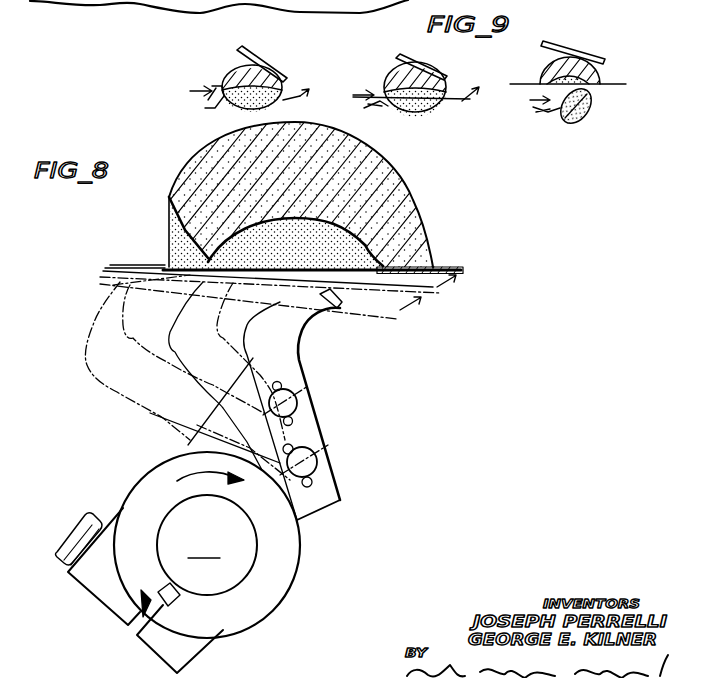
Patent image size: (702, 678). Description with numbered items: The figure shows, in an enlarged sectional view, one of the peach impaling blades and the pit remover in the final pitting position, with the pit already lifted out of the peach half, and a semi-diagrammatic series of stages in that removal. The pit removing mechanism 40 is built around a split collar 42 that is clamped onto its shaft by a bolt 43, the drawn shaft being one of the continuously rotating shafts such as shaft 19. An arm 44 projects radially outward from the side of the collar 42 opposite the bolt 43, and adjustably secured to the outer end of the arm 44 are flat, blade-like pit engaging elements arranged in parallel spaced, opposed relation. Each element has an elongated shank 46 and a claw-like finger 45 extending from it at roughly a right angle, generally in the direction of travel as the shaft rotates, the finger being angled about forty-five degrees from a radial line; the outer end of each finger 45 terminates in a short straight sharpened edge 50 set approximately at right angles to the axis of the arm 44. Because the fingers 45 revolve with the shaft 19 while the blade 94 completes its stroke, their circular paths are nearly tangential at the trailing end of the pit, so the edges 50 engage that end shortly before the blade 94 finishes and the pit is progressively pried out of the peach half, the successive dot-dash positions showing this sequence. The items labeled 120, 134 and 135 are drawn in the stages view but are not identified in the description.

In FIG. 8, the shaft 19 is at (204, 547).
In FIG. 8, the mechanism 40 is at (350, 444).
In FIG. 8, the split collar 42 is at (232, 545).
In FIG. 8, the bolt 43 is at (77, 533).
In FIG. 8, the arm 44 is at (207, 418).
In FIG. 9, the claw-like finger 45 is at (226, 100).
In FIG. 8, the claw-like finger 45 is at (112, 283).
In FIG. 8, the shank 46 is at (314, 415).
In FIG. 8, the sharpened edge 50 is at (343, 301).
In FIG. 9, the blade 94 is at (283, 100).
In FIG. 8, the blade 94 is at (455, 270).
In FIG. 9, the cover plate 120 is at (257, 62).
In FIG. 9, the product body 134 is at (233, 70).
In FIG. 8, the conveyor line 135 is at (367, 314).